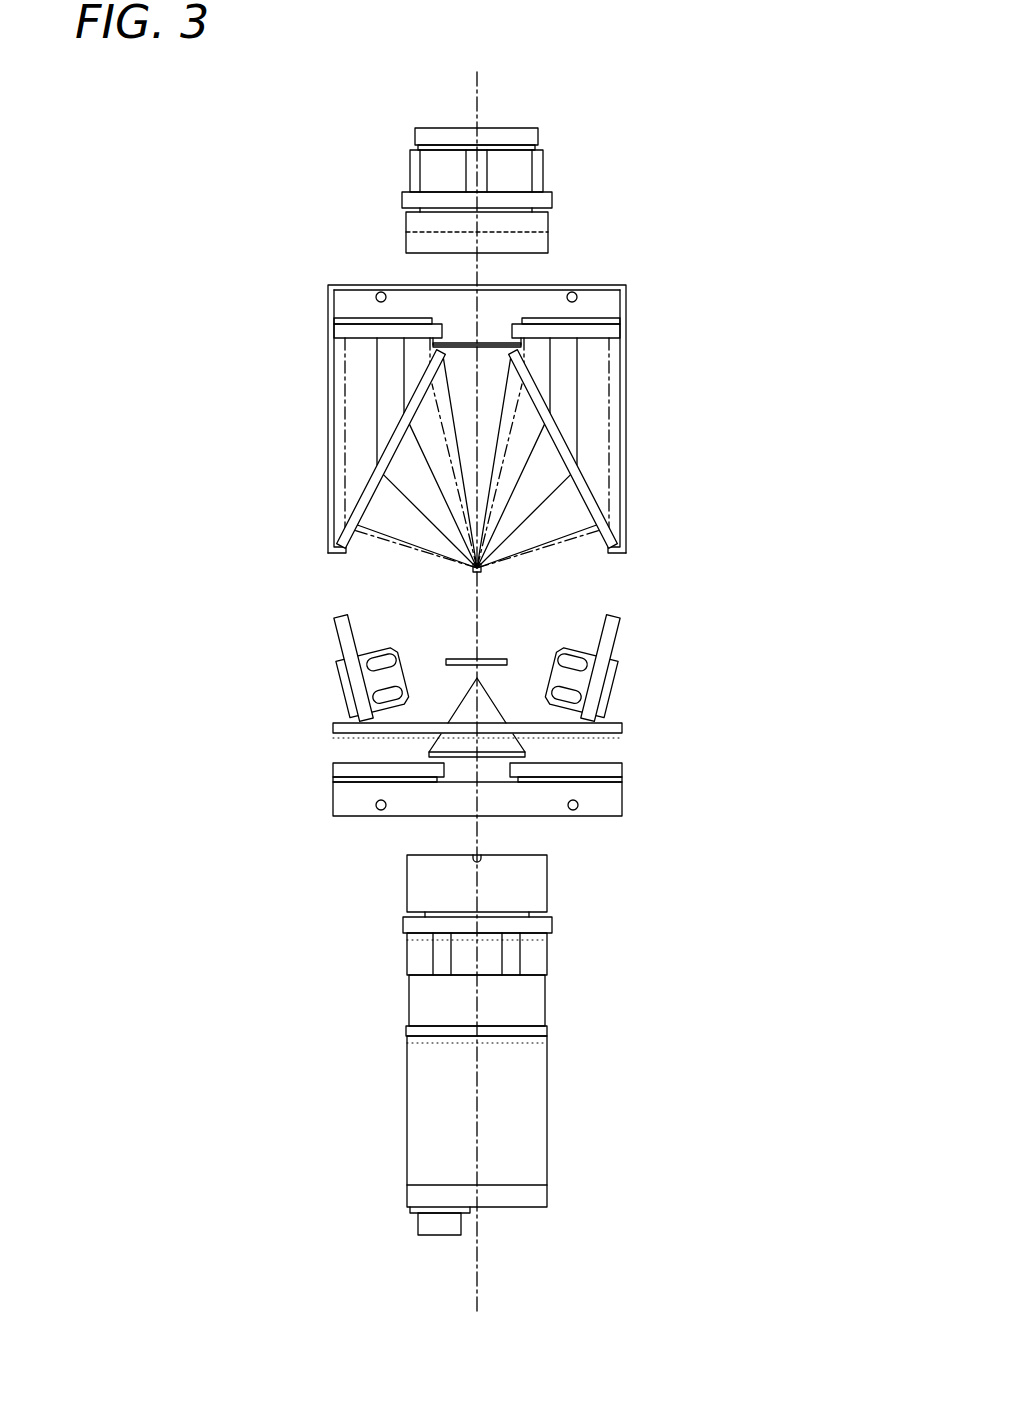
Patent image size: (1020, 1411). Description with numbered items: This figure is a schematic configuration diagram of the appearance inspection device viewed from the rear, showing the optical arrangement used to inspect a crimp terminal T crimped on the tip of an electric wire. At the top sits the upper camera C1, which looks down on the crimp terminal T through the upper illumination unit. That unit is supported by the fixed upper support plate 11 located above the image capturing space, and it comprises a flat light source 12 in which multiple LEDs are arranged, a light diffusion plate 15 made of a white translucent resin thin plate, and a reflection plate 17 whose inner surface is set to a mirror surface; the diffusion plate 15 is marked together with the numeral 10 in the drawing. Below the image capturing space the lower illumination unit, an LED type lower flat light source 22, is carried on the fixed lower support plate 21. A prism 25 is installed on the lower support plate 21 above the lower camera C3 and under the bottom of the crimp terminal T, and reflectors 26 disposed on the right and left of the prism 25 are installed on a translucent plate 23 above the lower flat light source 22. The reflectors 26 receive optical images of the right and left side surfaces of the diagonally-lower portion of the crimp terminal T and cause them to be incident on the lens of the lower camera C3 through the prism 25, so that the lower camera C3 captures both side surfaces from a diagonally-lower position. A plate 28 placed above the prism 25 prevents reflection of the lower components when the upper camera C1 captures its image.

The upper camera C1 is at (547, 165).
The upper support plate 11 is at (556, 285).
The flat light source 12 is at (345, 331).
The reflection plate 17 is at (328, 410).
The light diffusion plate 15 is at (370, 487).
The reflecting unit 10 is at (499, 453).
The crimp terminal T is at (484, 571).
The plate 28 is at (493, 658).
The reflector 26 is at (340, 636).
The prism 25 is at (493, 703).
The translucent plate 23 is at (335, 727).
The lower flat light source 22 is at (337, 773).
The lower support plate 21 is at (610, 796).
The lower camera C3 is at (537, 1002).